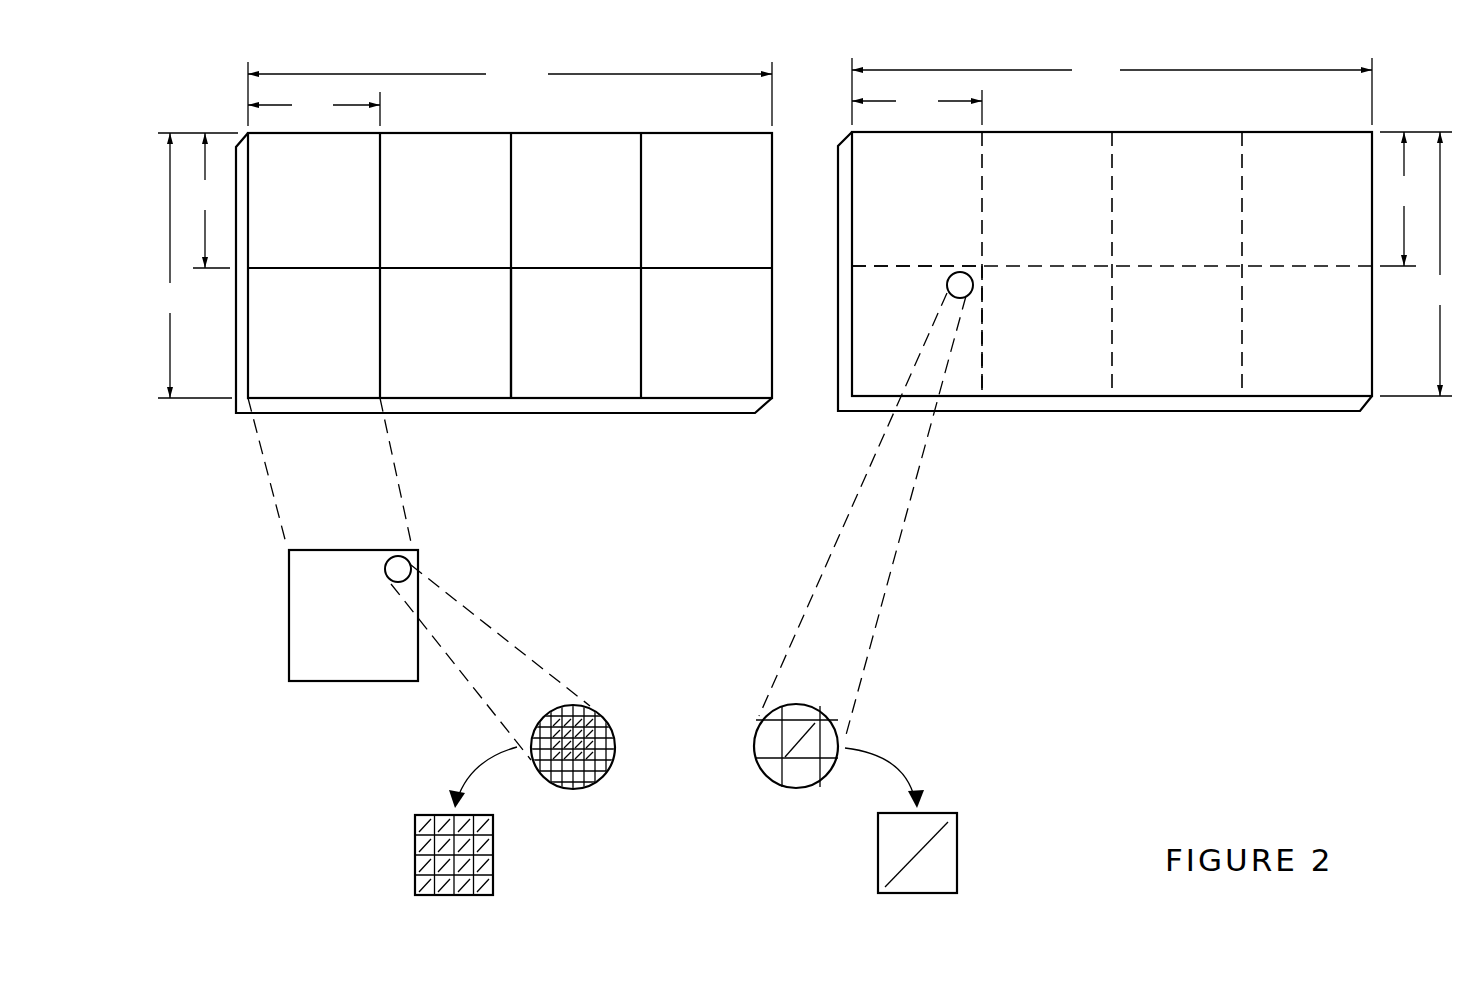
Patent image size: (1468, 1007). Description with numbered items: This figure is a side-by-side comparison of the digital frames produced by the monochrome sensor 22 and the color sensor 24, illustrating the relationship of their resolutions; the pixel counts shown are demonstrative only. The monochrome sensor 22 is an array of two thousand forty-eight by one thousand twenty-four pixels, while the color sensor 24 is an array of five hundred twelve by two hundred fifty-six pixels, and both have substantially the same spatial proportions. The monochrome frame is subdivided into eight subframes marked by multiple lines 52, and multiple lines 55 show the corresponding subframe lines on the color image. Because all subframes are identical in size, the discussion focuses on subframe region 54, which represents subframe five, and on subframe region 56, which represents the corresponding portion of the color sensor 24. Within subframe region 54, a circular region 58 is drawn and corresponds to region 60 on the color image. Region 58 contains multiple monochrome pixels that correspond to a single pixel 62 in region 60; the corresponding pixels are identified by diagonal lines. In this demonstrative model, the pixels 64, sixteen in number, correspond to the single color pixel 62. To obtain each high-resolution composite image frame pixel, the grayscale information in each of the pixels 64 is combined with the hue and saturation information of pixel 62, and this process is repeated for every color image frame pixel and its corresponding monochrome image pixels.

The monochrome sensor 22 is at (740, 401).
The color sensor 24 is at (1348, 403).
The multiple lines 52 is at (513, 390).
The subframe region 54 is at (351, 391).
The multiple lines 55 is at (982, 377).
The subframe region 56 is at (882, 382).
The region 58 is at (401, 565).
The region 60 is at (953, 286).
The pixel 62 is at (803, 750).
The pixels 64 is at (415, 850).